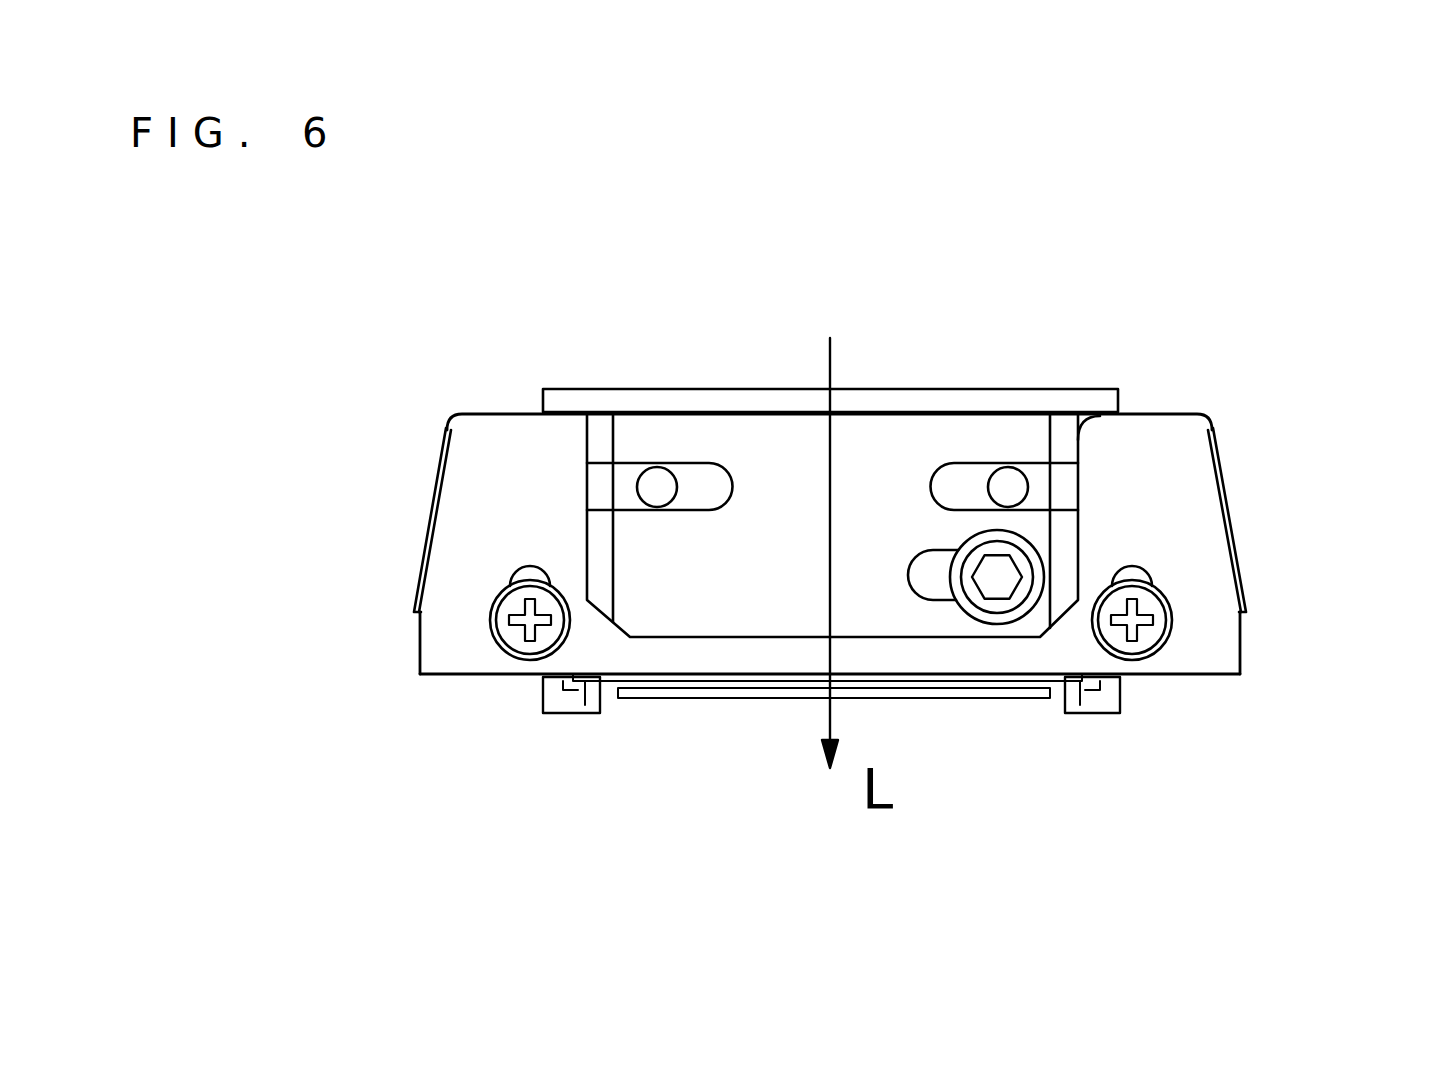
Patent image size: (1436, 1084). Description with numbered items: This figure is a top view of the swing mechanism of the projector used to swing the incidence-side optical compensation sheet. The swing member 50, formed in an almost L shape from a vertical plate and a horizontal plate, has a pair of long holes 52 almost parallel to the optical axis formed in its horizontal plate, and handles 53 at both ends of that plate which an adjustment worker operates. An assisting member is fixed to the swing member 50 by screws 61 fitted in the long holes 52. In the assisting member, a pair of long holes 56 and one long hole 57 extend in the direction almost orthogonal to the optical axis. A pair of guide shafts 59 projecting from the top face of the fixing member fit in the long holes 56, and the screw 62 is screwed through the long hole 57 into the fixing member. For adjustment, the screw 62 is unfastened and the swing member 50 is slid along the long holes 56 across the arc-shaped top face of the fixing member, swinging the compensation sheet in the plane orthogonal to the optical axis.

The swing member 50 is at (1208, 663).
The long holes 52 is at (523, 567).
The handles 53 is at (440, 465).
The long holes 56 is at (623, 473).
The long hole 57 is at (935, 600).
The guide shafts 59 is at (1007, 480).
The screws 61 is at (505, 650).
The screw 62 is at (1020, 553).